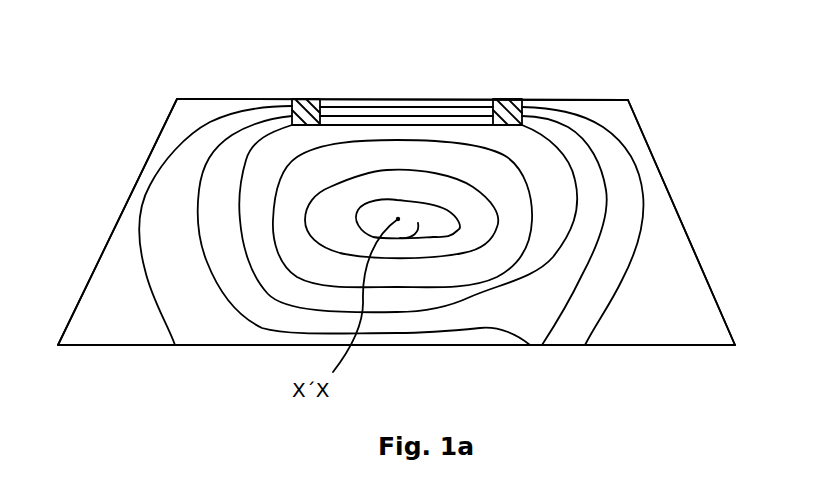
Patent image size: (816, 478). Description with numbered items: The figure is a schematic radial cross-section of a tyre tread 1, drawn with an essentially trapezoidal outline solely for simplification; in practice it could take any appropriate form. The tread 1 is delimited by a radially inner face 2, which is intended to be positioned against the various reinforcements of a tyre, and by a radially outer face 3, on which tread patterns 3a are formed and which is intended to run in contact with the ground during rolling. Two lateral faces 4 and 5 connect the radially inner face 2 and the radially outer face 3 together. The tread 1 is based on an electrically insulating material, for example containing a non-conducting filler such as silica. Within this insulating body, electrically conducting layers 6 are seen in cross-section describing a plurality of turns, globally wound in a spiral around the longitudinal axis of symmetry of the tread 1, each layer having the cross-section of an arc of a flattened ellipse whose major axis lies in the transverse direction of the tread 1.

The tread 1 is at (118, 362).
The radially inner face 2 is at (402, 344).
The radially outer face 3 is at (215, 98).
The tread patterns 3a is at (400, 98).
The lateral face 4 is at (112, 235).
The lateral face 5 is at (695, 245).
The electrically conducting layers 6 is at (632, 267).